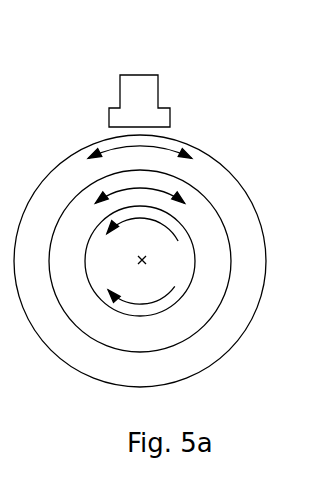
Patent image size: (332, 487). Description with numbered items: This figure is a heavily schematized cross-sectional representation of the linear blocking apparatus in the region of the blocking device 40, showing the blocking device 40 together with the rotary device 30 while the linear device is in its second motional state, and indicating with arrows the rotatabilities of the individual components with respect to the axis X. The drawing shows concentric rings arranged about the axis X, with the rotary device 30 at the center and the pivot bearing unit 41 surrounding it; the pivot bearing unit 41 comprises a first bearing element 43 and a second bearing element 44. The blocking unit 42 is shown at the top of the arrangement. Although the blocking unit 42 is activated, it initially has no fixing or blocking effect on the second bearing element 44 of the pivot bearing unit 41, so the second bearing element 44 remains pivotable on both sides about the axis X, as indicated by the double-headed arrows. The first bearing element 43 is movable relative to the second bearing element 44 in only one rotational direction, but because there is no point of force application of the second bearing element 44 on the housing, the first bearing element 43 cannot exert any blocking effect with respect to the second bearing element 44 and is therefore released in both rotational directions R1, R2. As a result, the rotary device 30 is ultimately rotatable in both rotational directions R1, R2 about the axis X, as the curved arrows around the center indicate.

The blocking device 40 is at (200, 107).
The blocking unit 42 is at (110, 116).
The pivot bearing unit 41 is at (262, 208).
The first bearing element 43 is at (205, 290).
The second bearing element 44 is at (200, 348).
The rotary device 30 is at (180, 244).
The first rotational direction R1 is at (142, 238).
The second rotational direction R2 is at (141, 286).
The axis X is at (144, 259).